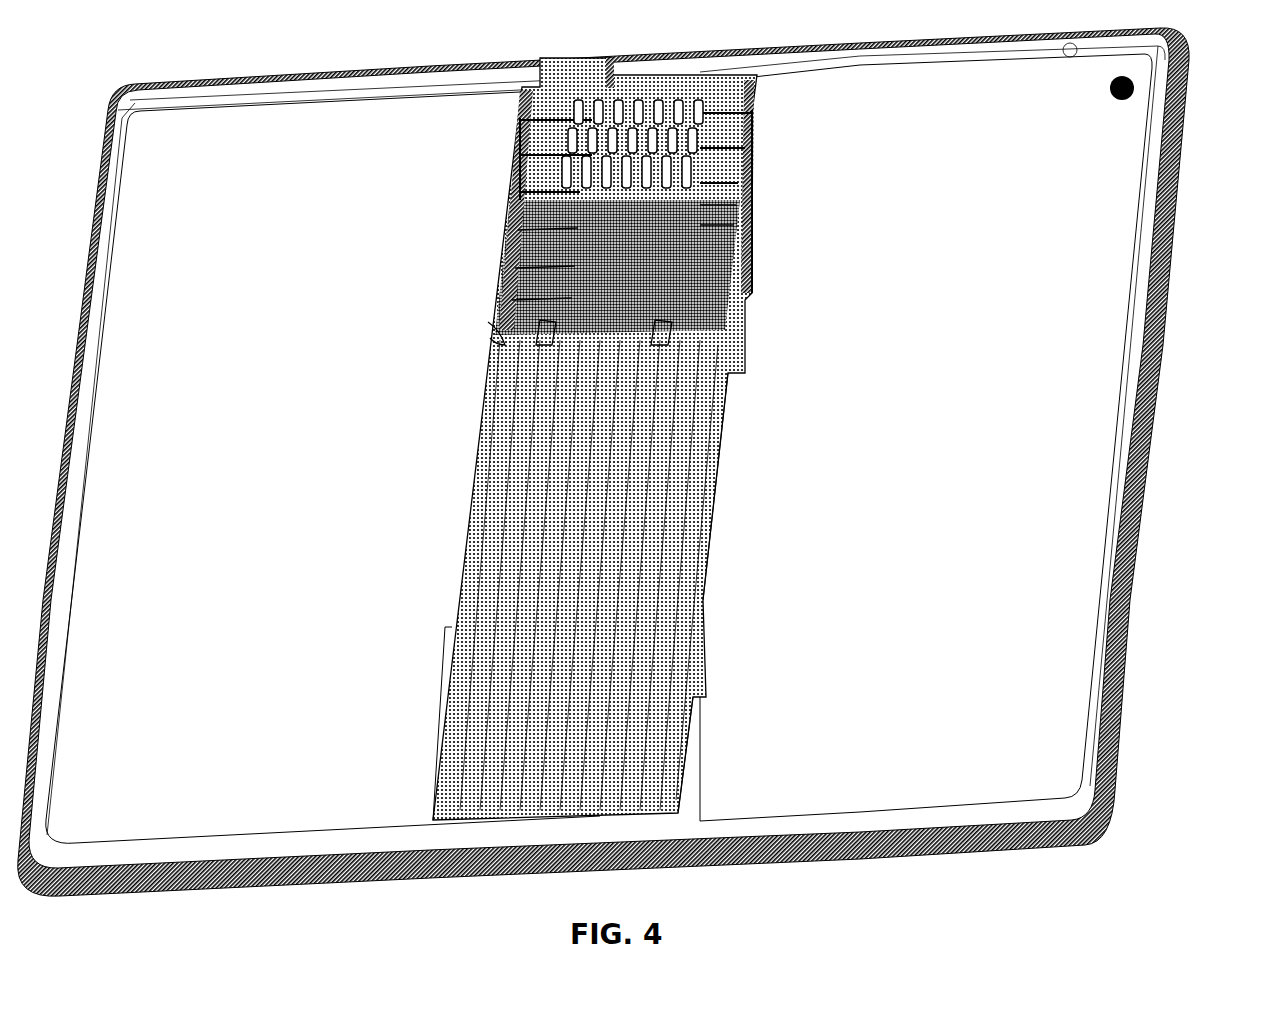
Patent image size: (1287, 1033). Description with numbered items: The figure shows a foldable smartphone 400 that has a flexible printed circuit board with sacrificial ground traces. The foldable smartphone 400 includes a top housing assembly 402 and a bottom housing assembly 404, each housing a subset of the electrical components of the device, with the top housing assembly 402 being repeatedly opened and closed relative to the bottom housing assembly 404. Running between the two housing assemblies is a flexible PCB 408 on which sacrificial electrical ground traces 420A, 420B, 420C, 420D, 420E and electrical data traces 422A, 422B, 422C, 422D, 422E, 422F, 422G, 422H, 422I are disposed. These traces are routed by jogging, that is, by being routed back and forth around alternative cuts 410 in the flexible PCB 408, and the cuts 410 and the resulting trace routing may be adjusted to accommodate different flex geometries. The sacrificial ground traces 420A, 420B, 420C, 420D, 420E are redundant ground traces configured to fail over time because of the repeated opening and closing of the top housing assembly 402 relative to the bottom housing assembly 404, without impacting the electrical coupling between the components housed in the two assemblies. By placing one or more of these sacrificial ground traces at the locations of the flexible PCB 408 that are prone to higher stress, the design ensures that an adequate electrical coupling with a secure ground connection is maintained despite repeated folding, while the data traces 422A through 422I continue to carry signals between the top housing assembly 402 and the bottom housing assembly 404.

The foldable smartphone 400 is at (1208, 76).
The top housing assembly 402 is at (908, 318).
The bottom housing assembly 404 is at (382, 318).
The flexible PCB 408 is at (708, 510).
The cuts 410 is at (521, 526).
The sacrificial electrical ground trace 420A is at (757, 118).
The sacrificial electrical ground trace 420B is at (752, 153).
The sacrificial electrical ground trace 420C is at (746, 183).
The sacrificial electrical ground trace 420D is at (742, 203).
The sacrificial electrical ground trace 420E is at (738, 224).
The electrical data trace 422A is at (520, 196).
The electrical data trace 422B is at (518, 222).
The electrical data trace 422C is at (516, 244).
The electrical data trace 422D is at (514, 270).
The electrical data trace 422E is at (524, 300).
The electrical data trace 422F is at (497, 332).
The electrical data trace 422G is at (488, 337).
The electrical data trace 422H is at (542, 336).
The electrical data trace 422I is at (667, 338).